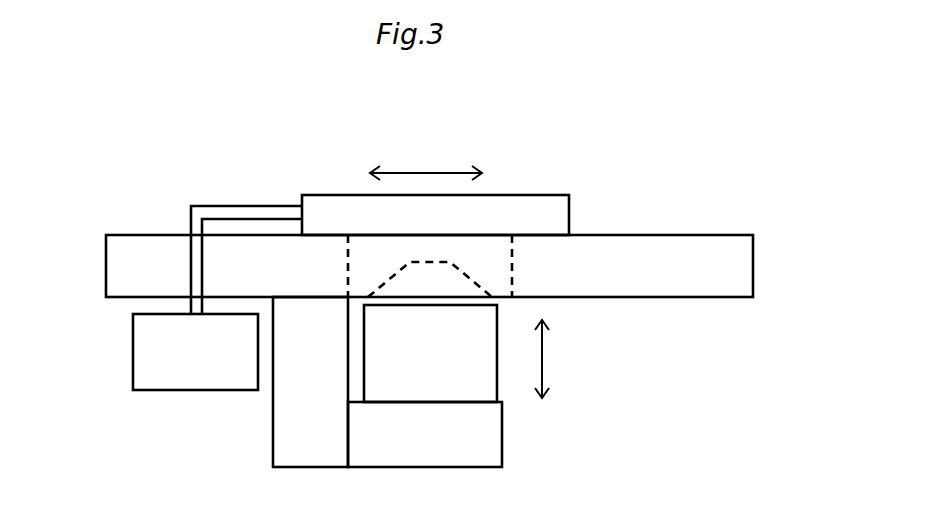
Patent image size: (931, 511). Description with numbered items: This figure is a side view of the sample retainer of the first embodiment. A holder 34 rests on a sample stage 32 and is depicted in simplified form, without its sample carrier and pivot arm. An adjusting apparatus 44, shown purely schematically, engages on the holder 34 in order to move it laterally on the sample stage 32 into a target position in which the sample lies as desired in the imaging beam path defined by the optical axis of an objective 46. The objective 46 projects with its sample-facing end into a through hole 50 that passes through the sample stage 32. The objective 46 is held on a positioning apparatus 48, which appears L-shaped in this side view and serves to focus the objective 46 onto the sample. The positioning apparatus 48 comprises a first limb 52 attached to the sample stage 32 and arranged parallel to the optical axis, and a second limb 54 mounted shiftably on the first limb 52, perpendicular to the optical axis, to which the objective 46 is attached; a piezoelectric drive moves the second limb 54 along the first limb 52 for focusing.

The sample stage 32 is at (700, 247).
The holder 34 is at (566, 213).
The through hole 50 is at (492, 280).
The adjusting apparatus 44 is at (147, 378).
The positioning apparatus 48 is at (368, 402).
The first limb 52 is at (280, 415).
The second limb 54 is at (490, 455).
The objective 46 is at (488, 368).